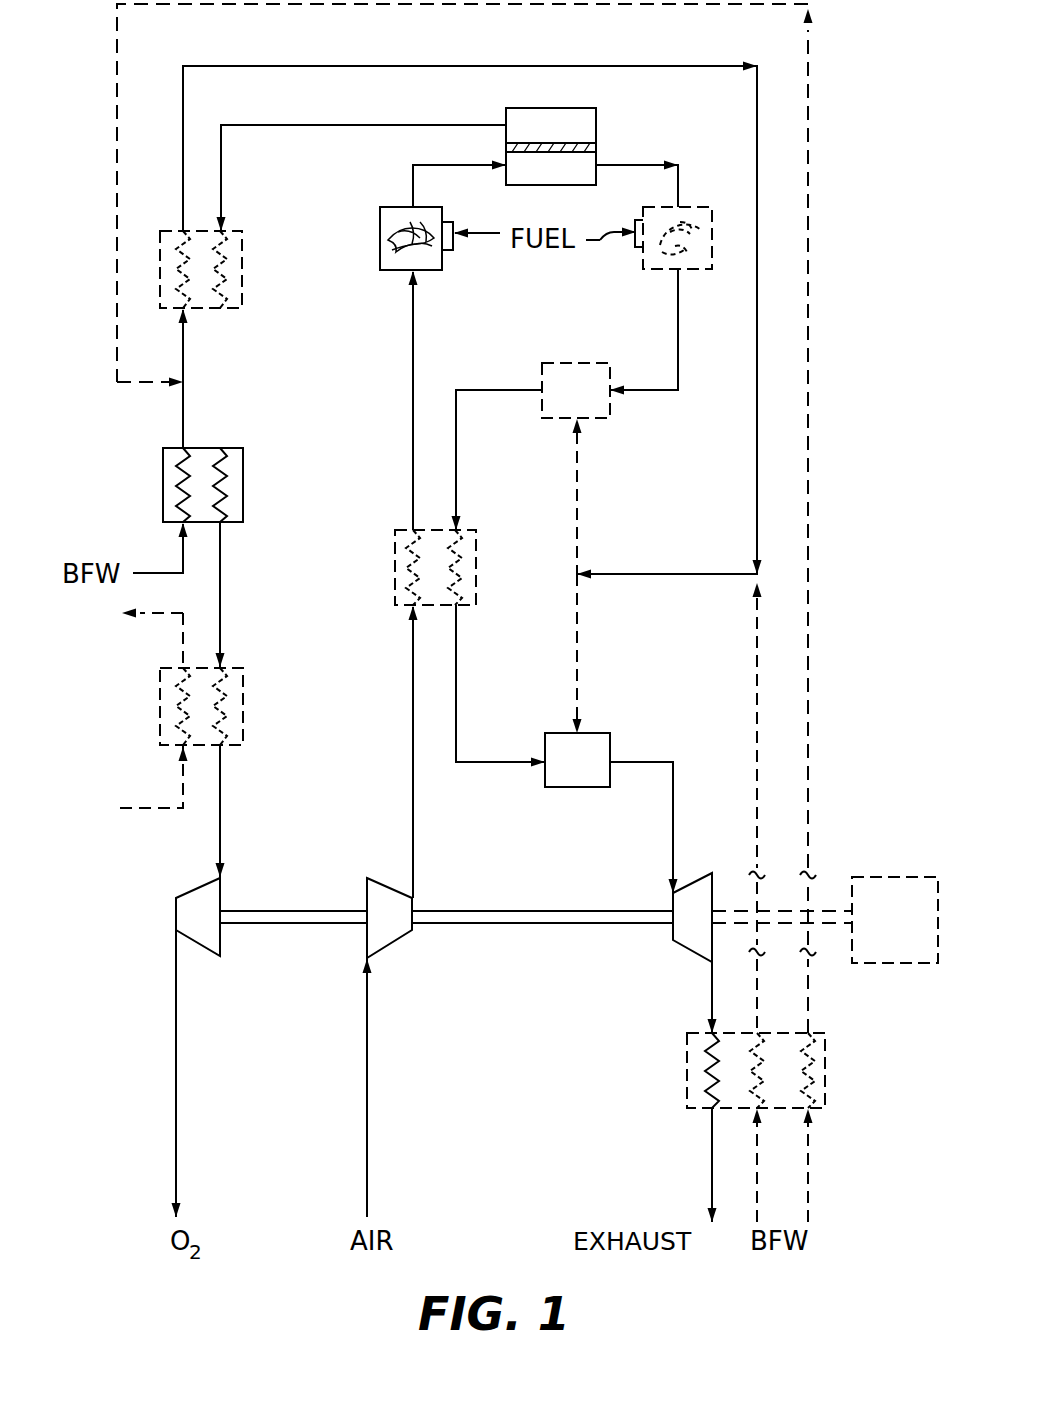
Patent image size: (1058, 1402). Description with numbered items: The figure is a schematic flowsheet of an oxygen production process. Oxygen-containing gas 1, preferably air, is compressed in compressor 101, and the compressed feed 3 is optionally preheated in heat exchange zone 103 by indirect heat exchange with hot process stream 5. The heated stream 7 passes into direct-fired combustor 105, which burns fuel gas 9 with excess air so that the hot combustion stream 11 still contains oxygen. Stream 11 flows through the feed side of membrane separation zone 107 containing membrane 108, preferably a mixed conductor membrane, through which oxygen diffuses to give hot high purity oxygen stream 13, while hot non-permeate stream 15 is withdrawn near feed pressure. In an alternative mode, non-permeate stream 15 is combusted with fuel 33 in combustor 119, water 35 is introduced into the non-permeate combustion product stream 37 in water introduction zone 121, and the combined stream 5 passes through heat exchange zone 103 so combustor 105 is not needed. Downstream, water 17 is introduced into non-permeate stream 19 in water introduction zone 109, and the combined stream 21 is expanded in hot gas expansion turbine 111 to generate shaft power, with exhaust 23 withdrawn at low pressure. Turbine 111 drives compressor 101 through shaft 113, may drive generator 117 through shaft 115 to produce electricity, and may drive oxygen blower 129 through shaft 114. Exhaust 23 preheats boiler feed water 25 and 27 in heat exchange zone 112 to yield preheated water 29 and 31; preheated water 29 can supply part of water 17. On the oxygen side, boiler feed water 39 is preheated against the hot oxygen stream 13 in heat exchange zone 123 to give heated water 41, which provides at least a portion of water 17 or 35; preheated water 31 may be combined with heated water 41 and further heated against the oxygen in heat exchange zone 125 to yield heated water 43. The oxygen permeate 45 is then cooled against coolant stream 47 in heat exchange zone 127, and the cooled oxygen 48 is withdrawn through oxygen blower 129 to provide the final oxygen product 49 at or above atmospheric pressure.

The oxygen-containing gas 1 is at (367, 1010).
The compressed feed 3 is at (412, 769).
The hot process stream 5 is at (456, 460).
The heated stream 7 is at (413, 401).
The fuel gas 9 is at (485, 233).
The hot combustion stream 11 is at (413, 175).
The hot high purity oxygen stream 13 is at (365, 125).
The hot non-permeate stream 15 is at (678, 182).
The water 17 is at (577, 635).
The non-permeate stream 19 is at (456, 668).
The combined stream 21 is at (673, 835).
The exhaust 23 is at (712, 992).
The boiler feed water 25 is at (757, 1148).
The boiler feed water 27 is at (808, 1200).
The preheated water 29 is at (757, 690).
The preheated water 31 is at (808, 657).
The fuel 33 is at (614, 236).
The water 35 is at (577, 482).
The non-permeate combustion product stream 37 is at (678, 374).
The boiler feed water 39 is at (143, 572).
The heated water 41 is at (183, 426).
The heated water 43 is at (235, 66).
The oxygen permeate 45 is at (220, 603).
The coolant stream 47 is at (145, 806).
The cooled oxygen permeate 48 is at (220, 803).
The final oxygen product 49 is at (176, 997).
The compressor 101 is at (377, 876).
The heat exchange zone 103 is at (394, 534).
The direct-fired combustor 105 is at (380, 256).
The membrane separation zone 107 is at (606, 106).
The membrane 108 is at (575, 147).
The water introduction zone 109 is at (564, 788).
The hot gas expansion turbine 111 is at (668, 944).
The heat exchange zone 112 is at (825, 1055).
The shaft 113 is at (513, 923).
The shaft 114 is at (300, 923).
The shaft 115 is at (820, 925).
The generator 117 is at (918, 936).
The combustor 119 is at (656, 280).
The water introduction zone 121 is at (546, 366).
The heat exchange zone 123 is at (243, 474).
The heat exchange zone 125 is at (243, 265).
The heat exchange zone 127 is at (243, 700).
The oxygen blower 129 is at (194, 887).